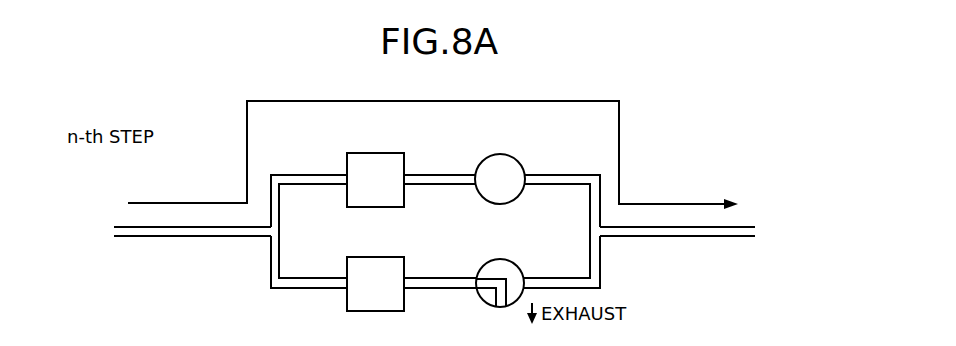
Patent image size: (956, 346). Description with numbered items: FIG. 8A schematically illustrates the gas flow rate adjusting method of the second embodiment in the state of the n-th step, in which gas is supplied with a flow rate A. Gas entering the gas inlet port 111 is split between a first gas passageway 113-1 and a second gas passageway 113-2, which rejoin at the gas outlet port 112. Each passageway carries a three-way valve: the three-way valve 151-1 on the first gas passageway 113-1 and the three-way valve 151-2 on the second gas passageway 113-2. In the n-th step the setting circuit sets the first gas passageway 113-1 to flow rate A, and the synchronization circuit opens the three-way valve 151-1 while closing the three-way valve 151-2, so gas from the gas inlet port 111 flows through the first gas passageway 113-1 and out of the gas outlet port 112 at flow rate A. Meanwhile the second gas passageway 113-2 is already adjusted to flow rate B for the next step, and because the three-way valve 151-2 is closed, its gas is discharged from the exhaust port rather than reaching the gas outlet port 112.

The gas inlet port 111 is at (114, 232).
The gas outlet port 112 is at (755, 233).
The first gas passageway 113-1 is at (310, 173).
The second gas passageway 113-2 is at (310, 277).
The three-way valve 151-1 is at (515, 193).
The three-way valve 151-2 is at (484, 300).